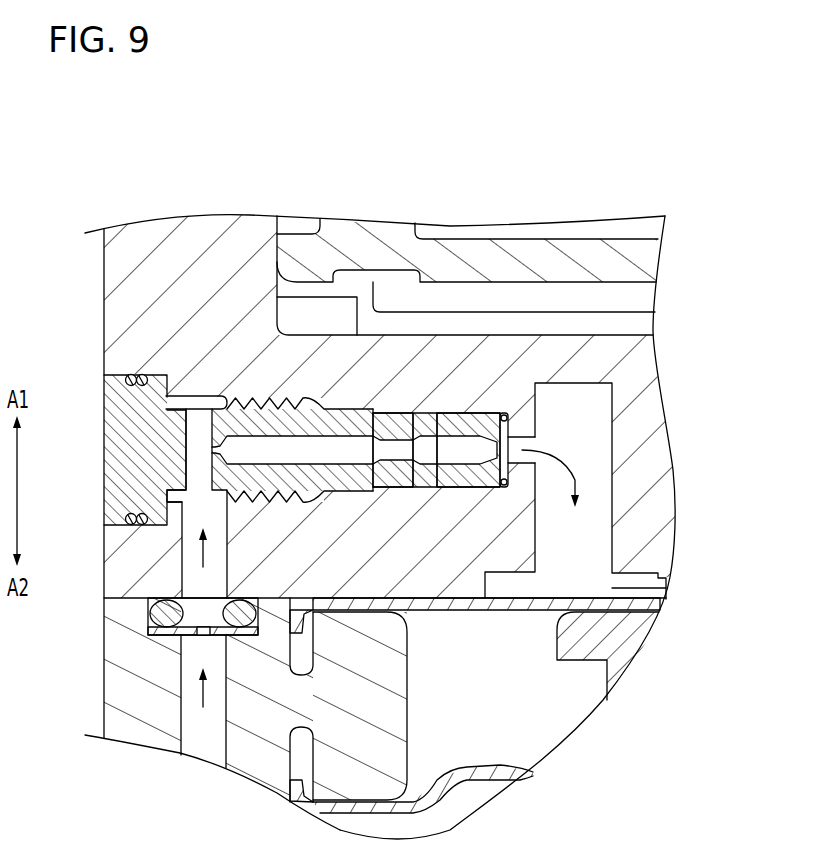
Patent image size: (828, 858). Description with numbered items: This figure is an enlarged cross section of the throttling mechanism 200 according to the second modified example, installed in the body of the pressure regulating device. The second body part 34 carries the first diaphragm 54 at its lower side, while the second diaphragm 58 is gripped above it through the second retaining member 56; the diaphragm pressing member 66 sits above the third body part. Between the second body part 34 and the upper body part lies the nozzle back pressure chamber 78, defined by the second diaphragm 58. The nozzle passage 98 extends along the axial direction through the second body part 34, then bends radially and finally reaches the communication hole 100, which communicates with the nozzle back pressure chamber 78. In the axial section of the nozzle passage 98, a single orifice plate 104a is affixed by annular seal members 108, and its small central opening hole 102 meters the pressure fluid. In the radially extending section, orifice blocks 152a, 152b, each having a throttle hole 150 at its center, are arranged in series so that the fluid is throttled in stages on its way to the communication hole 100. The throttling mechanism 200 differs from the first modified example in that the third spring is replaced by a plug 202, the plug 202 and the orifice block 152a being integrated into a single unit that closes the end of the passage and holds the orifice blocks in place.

The second body part 34 is at (420, 679).
The first diaphragm 54 is at (480, 773).
The second retaining member 56 is at (632, 638).
The second diaphragm 58 is at (518, 612).
The diaphragm pressing member 66 is at (569, 257).
The nozzle back pressure chamber 78 is at (658, 592).
The nozzle passage 98 is at (203, 740).
The communication hole 100 is at (583, 535).
The opening hole 102 is at (212, 646).
The orifice plate 104a is at (205, 638).
The annular seal member 108 is at (168, 614).
The throttle hole 150 is at (317, 443).
The orifice block 152a is at (453, 438).
The orifice block 152b is at (384, 440).
The throttling mechanism 200 is at (272, 377).
The plug 202 is at (110, 421).